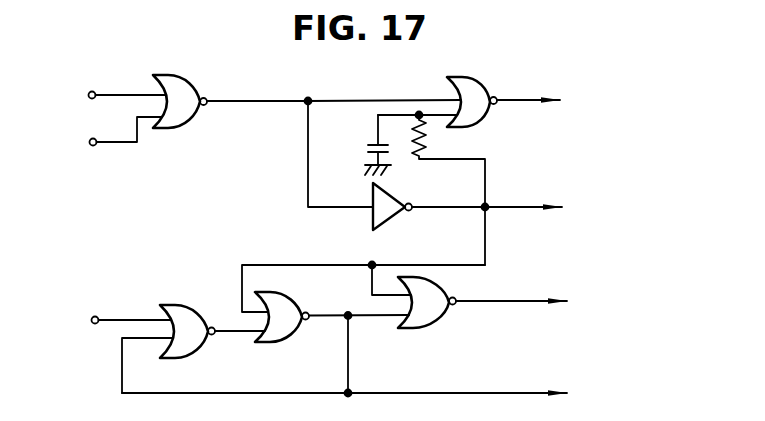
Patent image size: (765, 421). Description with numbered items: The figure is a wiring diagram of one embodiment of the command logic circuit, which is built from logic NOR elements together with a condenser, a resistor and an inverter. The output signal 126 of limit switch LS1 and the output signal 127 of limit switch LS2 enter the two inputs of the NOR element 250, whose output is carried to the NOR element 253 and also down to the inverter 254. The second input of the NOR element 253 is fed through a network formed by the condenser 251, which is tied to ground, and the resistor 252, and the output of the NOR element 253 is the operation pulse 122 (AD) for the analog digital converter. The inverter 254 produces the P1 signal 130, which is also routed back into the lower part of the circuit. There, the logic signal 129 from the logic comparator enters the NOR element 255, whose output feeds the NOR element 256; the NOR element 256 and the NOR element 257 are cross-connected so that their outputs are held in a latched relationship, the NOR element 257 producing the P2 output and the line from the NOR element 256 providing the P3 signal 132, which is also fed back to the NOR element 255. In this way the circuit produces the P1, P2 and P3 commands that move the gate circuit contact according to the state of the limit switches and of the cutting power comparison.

The operation pulse 122 is at (576, 102).
The output signal of limit switch LS1 126 is at (103, 97).
The output signal of limit switch LS2 127 is at (102, 138).
The logic signal 129 is at (110, 321).
The P1 signal 130 is at (566, 207).
The P3 signal 132 is at (386, 347).
The NOR element 250 is at (186, 122).
The condenser 251 is at (371, 146).
The resistor 252 is at (426, 142).
The NOR element 253 is at (492, 64).
The inverter 254 is at (388, 216).
The NOR element 255 is at (186, 355).
The NOR element 256 is at (286, 340).
The NOR element 257 is at (436, 323).